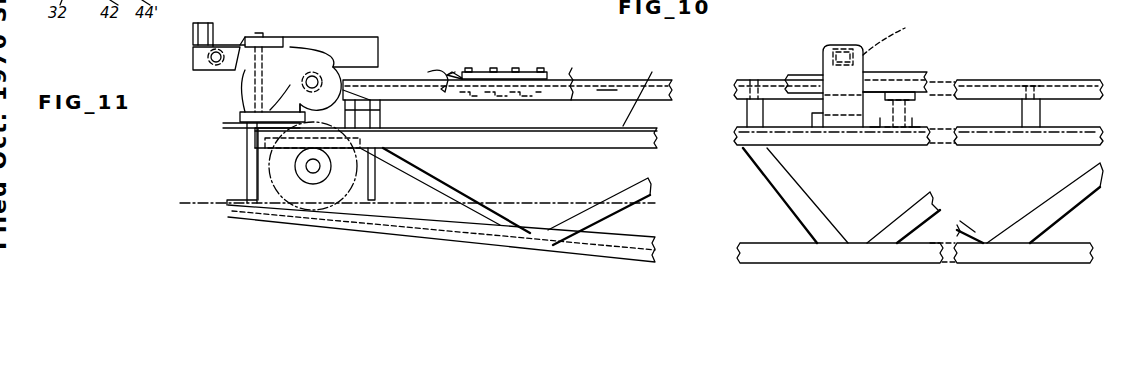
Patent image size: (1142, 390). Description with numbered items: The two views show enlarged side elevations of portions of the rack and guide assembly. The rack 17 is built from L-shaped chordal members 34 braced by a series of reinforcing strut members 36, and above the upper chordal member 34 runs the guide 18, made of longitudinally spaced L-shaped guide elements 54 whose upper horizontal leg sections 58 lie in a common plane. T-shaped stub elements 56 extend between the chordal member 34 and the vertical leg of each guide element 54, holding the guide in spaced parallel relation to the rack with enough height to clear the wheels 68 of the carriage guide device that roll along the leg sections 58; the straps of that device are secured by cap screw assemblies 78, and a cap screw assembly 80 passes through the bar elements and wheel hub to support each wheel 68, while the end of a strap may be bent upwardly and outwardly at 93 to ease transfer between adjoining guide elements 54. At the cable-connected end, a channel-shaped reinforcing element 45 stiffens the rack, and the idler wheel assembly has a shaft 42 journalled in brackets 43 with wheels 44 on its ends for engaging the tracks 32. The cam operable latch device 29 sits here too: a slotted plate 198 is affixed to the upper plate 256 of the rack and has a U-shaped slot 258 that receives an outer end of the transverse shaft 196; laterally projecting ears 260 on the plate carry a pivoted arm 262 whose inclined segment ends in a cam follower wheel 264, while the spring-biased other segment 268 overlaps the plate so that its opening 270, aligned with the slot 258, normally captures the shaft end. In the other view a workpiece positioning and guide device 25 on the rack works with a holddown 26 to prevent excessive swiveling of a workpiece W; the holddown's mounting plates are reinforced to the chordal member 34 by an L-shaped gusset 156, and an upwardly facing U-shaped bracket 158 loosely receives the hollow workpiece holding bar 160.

In FIG. 11, the rack 17 is at (623, 126).
In FIG. 10, the rack 17 is at (735, 140).
In FIG. 11, the guide 18 is at (627, 78).
In FIG. 10, the guide 18 is at (993, 74).
In FIG. 10, the workpiece positioning and guide device 25 is at (915, 113).
In FIG. 10, the holddown device 26 is at (845, 45).
In FIG. 11, the cam operable latch device 29 is at (232, 36).
In FIG. 11, the tracks 32 is at (183, 14).
In FIG. 11, the L-shaped chordal members 34 is at (530, 235).
In FIG. 10, the L-shaped chordal members 34 is at (1033, 146).
In FIG. 11, the reinforcing strut members 36 is at (448, 169).
In FIG. 10, the reinforcing strut members 36 is at (893, 220).
In FIG. 11, the shaft 42 is at (313, 170).
In FIG. 11, the brackets 43 is at (280, 160).
In FIG. 11, the wheels 44 is at (290, 195).
In FIG. 11, the channel-shaped reinforcing element 45 is at (245, 140).
In FIG. 11, the L-shaped guide elements 54 is at (597, 90).
In FIG. 10, the L-shaped guide elements 54 is at (1012, 93).
In FIG. 11, the T-shaped stub elements 56 is at (382, 110).
In FIG. 10, the T-shaped stub elements 56 is at (745, 110).
In FIG. 10, the horizontal leg sections 58 is at (1052, 80).
In FIG. 11, the wheels 68 is at (490, 72).
In FIG. 11, the cap screw assemblies 78 is at (516, 68).
In FIG. 11, the cap screw assembly 80 is at (468, 68).
In FIG. 11, the upwardly and outwardly bent strap end 93 is at (426, 75).
In FIG. 10, the L-shaped gusset 156 is at (818, 128).
In FIG. 10, the U-shaped bracket 158 is at (912, 68).
In FIG. 10, the hollow workpiece holding bar 160 is at (840, 52).
In FIG. 11, the shaft 196 is at (355, 34).
In FIG. 11, the slotted plates 198 is at (372, 45).
In FIG. 11, the upper plate 256 is at (245, 128).
In FIG. 11, the U-shaped slot 258 is at (462, 48).
In FIG. 11, the ears 260 is at (268, 37).
In FIG. 11, the arm 262 is at (302, 62).
In FIG. 11, the cam follower wheel 264 is at (193, 35).
In FIG. 11, the other segment of arm 268 is at (380, 60).
In FIG. 11, the opening 270 is at (271, 91).
In FIG. 10, the workpiece W is at (893, 75).